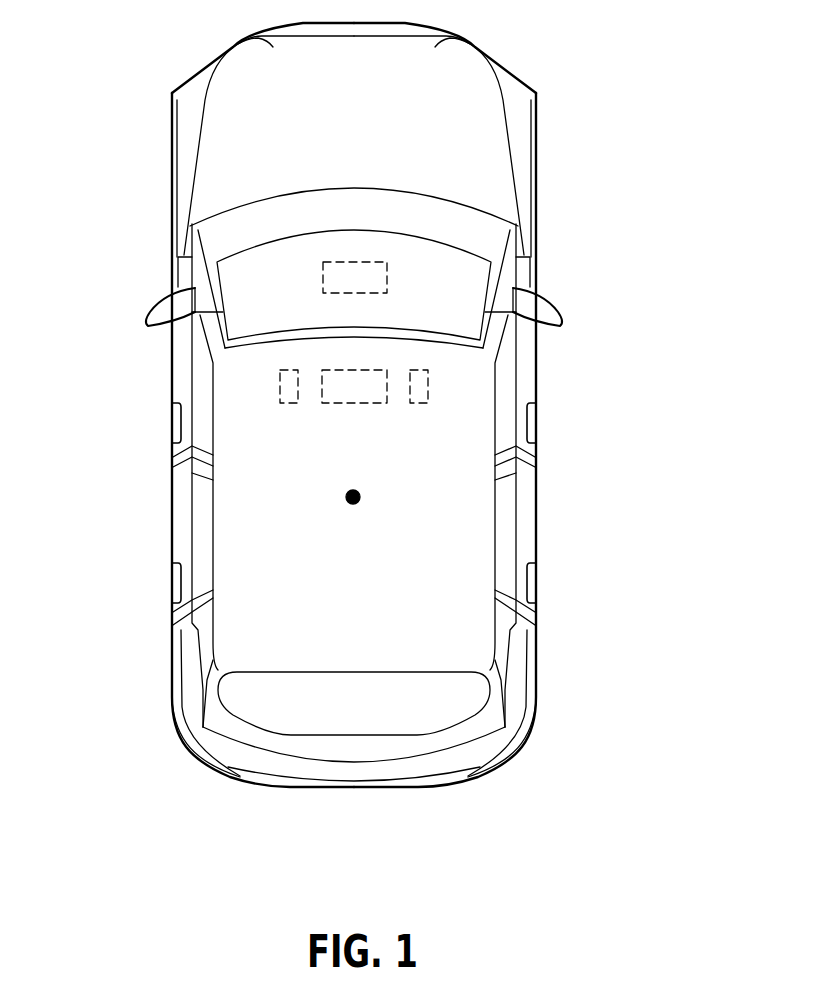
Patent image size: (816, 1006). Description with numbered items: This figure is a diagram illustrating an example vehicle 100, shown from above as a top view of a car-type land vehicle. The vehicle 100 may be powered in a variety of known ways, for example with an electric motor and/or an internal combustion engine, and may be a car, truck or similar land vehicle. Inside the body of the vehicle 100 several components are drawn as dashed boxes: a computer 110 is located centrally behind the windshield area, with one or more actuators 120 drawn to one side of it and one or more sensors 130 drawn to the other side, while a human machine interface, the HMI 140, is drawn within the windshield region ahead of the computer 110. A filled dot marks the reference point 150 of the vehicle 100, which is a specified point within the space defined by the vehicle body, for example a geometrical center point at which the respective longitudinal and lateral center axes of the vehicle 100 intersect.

The vehicle 100 is at (363, 598).
The computer 110 is at (323, 372).
The actuator 120 is at (278, 389).
The sensor 130 is at (430, 389).
The human machine interface 140 is at (389, 263).
The reference point 150 is at (345, 501).